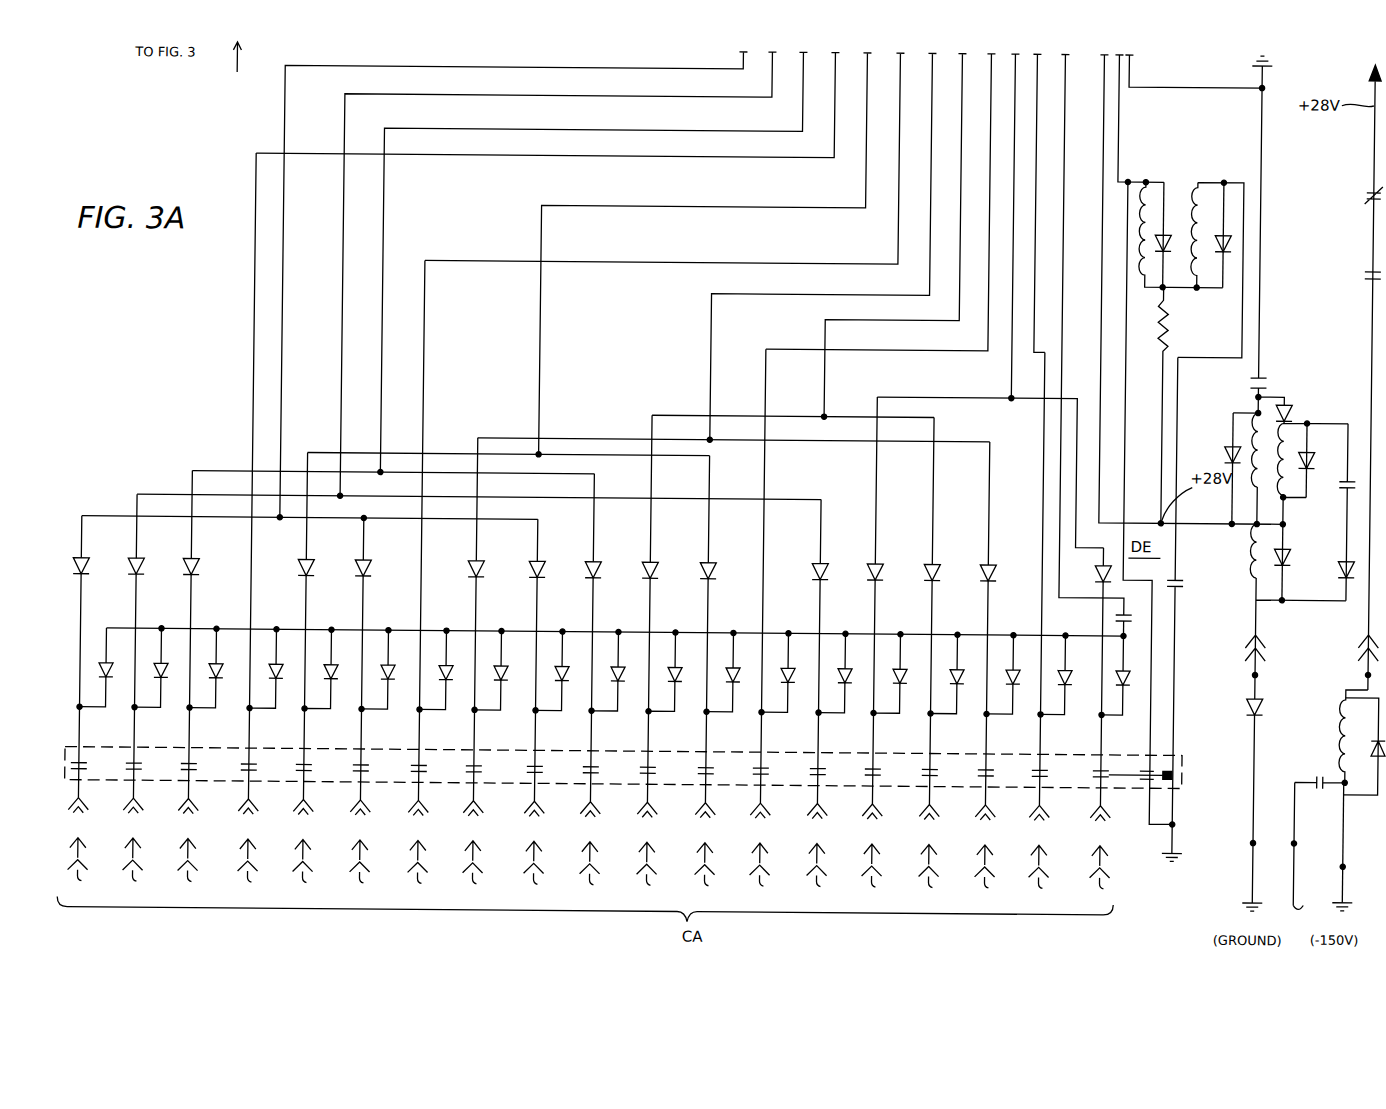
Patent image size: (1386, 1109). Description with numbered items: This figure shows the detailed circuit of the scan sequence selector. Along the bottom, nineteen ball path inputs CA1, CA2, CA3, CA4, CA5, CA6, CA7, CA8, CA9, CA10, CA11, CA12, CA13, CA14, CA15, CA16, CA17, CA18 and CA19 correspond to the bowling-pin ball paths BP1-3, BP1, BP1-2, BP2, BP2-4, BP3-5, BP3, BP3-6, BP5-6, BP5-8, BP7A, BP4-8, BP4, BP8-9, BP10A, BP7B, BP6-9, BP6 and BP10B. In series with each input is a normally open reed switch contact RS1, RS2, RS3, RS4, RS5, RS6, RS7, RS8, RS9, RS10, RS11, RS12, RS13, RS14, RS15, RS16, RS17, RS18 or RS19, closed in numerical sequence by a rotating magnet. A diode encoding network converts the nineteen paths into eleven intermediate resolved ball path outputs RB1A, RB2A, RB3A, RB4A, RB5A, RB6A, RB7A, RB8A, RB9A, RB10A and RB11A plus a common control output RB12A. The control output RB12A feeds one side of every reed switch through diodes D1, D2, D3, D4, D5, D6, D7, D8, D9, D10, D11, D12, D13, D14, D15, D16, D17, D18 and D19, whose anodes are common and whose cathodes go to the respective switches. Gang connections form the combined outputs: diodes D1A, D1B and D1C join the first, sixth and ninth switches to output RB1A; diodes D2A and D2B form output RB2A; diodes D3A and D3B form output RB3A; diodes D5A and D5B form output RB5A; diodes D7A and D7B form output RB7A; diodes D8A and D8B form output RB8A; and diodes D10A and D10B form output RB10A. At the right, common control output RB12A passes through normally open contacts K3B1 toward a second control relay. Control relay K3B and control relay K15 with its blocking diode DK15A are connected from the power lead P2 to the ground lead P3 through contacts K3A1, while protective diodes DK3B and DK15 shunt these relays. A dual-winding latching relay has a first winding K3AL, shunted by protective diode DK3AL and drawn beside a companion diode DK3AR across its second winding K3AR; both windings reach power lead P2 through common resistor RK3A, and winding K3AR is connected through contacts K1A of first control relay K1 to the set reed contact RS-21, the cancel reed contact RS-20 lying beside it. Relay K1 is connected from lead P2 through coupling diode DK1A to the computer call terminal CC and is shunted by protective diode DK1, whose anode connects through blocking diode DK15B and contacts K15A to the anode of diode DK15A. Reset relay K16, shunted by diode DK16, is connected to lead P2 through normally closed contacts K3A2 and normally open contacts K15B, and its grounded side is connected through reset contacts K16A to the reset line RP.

The intermediate resolved ball path output RB1A is at (286, 93).
The intermediate resolved ball path output RB2A is at (513, 92).
The intermediate resolved ball path output RB3A is at (663, 125).
The intermediate resolved ball path output RB4A is at (747, 151).
The intermediate resolved ball path output RB5A is at (713, 201).
The intermediate resolved ball path output RB6A is at (838, 257).
The intermediate resolved ball path output RB7A is at (933, 274).
The intermediate resolved ball path output RB8A is at (964, 303).
The intermediate resolved ball path output RB9A is at (989, 333).
The intermediate resolved ball path output RB10A is at (1017, 371).
The intermediate resolved ball path output RB11A is at (1047, 412).
The common control output RB12A is at (1066, 457).
The connecting diode D1A is at (103, 563).
The connecting diode D2A is at (158, 563).
The connecting diode D3A is at (213, 563).
The connecting diode D5A is at (328, 563).
The connecting diode D1B is at (385, 563).
The connecting diode D7A is at (498, 563).
The connecting diode D1C is at (559, 563).
The connecting diode D3B is at (615, 563).
The connecting diode D8A is at (672, 563).
The connecting diode D5B is at (730, 563).
The connecting diode D2B is at (842, 563).
The connecting diode D10A is at (897, 563).
The connecting diode D8B is at (954, 563).
The connecting diode D7B is at (1010, 563).
The connecting diode D10B is at (1102, 562).
The diode D1 is at (129, 680).
The diode D2 is at (184, 680).
The diode D3 is at (239, 680).
The diode D4 is at (299, 680).
The diode D5 is at (354, 680).
The diode D6 is at (411, 680).
The diode D7 is at (469, 680).
The diode D8 is at (524, 680).
The diode D9 is at (585, 680).
The diode D10 is at (641, 680).
The diode D11 is at (698, 680).
The diode D12 is at (756, 680).
The diode D13 is at (811, 680).
The diode D14 is at (868, 680).
The diode D15 is at (923, 680).
The diode D16 is at (980, 680).
The diode D17 is at (1036, 680).
The diode D18 is at (1088, 680).
The diode D19 is at (1138, 680).
The reed switch contact RS1 is at (117, 756).
The reed switch contact RS2 is at (172, 756).
The reed switch contact RS3 is at (227, 756).
The reed switch contact RS4 is at (287, 756).
The reed switch contact RS5 is at (342, 756).
The reed switch contact RS6 is at (399, 756).
The reed switch contact RS7 is at (457, 756).
The reed switch contact RS8 is at (512, 756).
The reed switch contact RS9 is at (573, 756).
The reed switch contact RS10 is at (629, 756).
The reed switch contact RS11 is at (686, 756).
The reed switch contact RS12 is at (744, 756).
The reed switch contact RS13 is at (799, 756).
The reed switch contact RS14 is at (856, 756).
The reed switch contact RS15 is at (911, 756).
The reed switch contact RS16 is at (968, 756).
The reed switch contact RS17 is at (1024, 756).
The reed switch contact RS18 is at (1078, 756).
The reed switch contact RS19 is at (1138, 756).
The ball path input CA1 is at (77, 867).
The ball path input CA2 is at (132, 867).
The ball path input CA3 is at (187, 867).
The ball path input CA4 is at (247, 868).
The ball path input CA5 is at (302, 868).
The ball path input CA6 is at (359, 869).
The ball path input CA7 is at (417, 869).
The ball path input CA8 is at (472, 870).
The ball path input CA9 is at (533, 870).
The ball path input CA10 is at (589, 871).
The ball path input CA11 is at (646, 871).
The ball path input CA12 is at (704, 872).
The ball path input CA13 is at (759, 872).
The ball path input CA14 is at (816, 872).
The ball path input CA15 is at (871, 873).
The ball path input CA16 is at (928, 873).
The ball path input CA17 is at (984, 874).
The ball path input CA18 is at (1038, 874).
The ball path input CA19 is at (1099, 875).
The ball path BP1-3 is at (78, 814).
The ball path BP1 is at (133, 814).
The ball path BP1-2 is at (188, 814).
The ball path BP2 is at (248, 815).
The ball path BP2-4 is at (303, 815).
The ball path BP3-5 is at (360, 816).
The ball path BP3 is at (418, 816).
The ball path BP3-6 is at (473, 817).
The ball path BP5-6 is at (534, 817).
The ball path BP5-8 is at (590, 818).
The ball path BP7A is at (647, 818).
The ball path BP4-8 is at (705, 819).
The ball path BP4 is at (760, 819).
The ball path BP8-9 is at (817, 819).
The ball path BP10A is at (872, 820).
The ball path BP7B is at (929, 820).
The ball path BP6-9 is at (985, 821).
The ball path BP6 is at (1039, 821).
The ball path BP10B is at (1100, 822).
The first common ground lead P3 is at (1181, 78).
The second common power lead P2 is at (1373, 71).
The first winding of latching relay K3AL is at (1150, 175).
The second winding of latching relay K3AR is at (1201, 175).
The protective diode DK3AL is at (1168, 224).
The diode DK3AR is at (1229, 225).
The normally closed relay contacts K3A2 is at (1371, 181).
The normally open relay contacts K15B is at (1368, 266).
The common resistor RK3A is at (1172, 317).
The protective diode DK15 is at (1318, 448).
The normally open relay contacts K3A1 is at (1266, 372).
The control relay K3B is at (1261, 410).
The blocking diode DK15A is at (1296, 403).
The protective diode DK3B is at (1233, 437).
The control relay K15 is at (1286, 485).
The normally open relay contacts K15A is at (1351, 481).
The first control relay K1 is at (1264, 553).
The protective diode DK1 is at (1297, 552).
The normally open relay contacts K1A is at (1191, 575).
The blocking diode DK15B is at (1347, 566).
The normally open relay contacts K3B1 is at (1122, 611).
The coupling diode DK1A is at (1258, 699).
The scan sequence cancel contact RS-20 is at (1167, 763).
The scan sequence set contact RS-21 is at (1185, 787).
The reset relay K16 is at (1354, 713).
The protective diode DK16 is at (1379, 739).
The normally open reset contacts K16A is at (1332, 779).
The computer call terminal CC is at (1261, 890).
The RESET line RP is at (1321, 902).